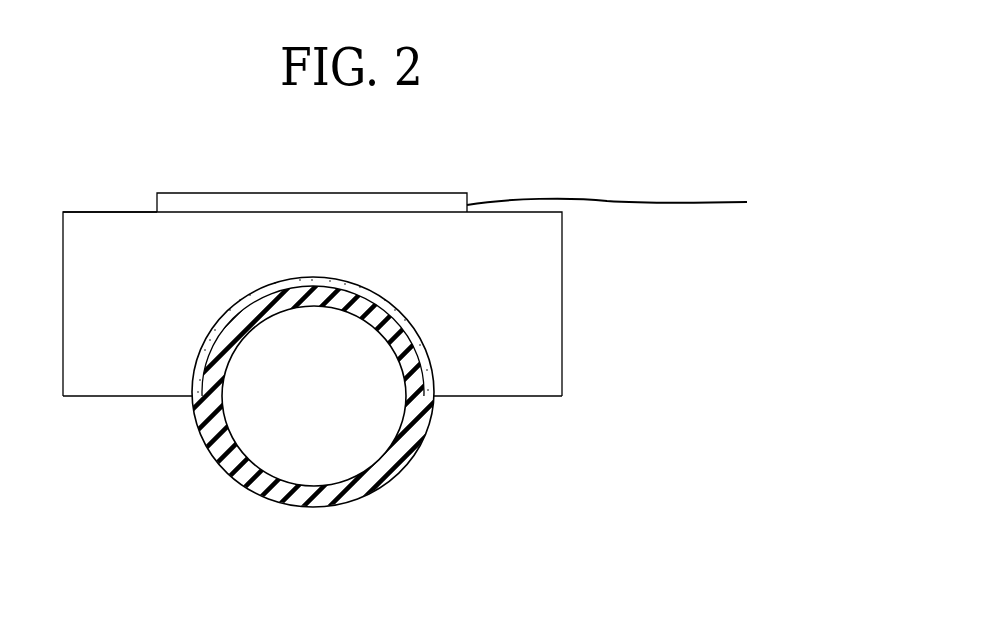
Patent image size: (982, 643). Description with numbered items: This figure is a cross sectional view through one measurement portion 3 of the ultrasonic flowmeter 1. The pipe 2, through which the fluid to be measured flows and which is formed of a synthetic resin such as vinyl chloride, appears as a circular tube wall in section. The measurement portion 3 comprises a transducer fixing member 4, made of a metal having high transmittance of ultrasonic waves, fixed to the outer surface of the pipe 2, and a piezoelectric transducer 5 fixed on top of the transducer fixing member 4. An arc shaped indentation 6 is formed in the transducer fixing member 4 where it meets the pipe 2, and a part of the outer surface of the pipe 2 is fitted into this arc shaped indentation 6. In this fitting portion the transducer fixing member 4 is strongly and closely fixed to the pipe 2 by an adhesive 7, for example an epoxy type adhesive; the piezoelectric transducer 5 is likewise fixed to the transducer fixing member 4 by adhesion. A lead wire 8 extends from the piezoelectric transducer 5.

The ultrasonic flowmeter 1 is at (500, 172).
The pipe 2 is at (212, 443).
The measurement portion 3 is at (118, 209).
The transducer fixing member 4 is at (547, 329).
The piezoelectric transducer 5 is at (367, 200).
The arc shaped indentation 6 is at (317, 285).
The adhesive 7 is at (432, 367).
The lead wire 8 is at (683, 202).